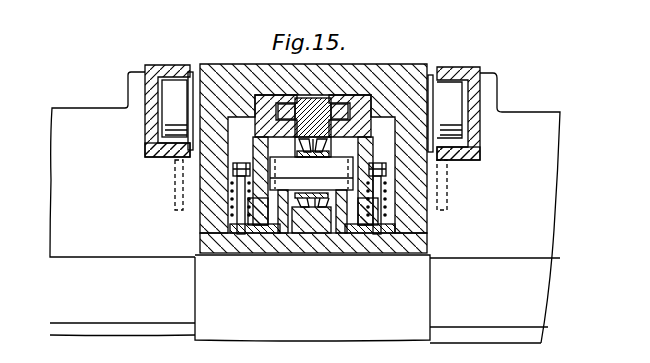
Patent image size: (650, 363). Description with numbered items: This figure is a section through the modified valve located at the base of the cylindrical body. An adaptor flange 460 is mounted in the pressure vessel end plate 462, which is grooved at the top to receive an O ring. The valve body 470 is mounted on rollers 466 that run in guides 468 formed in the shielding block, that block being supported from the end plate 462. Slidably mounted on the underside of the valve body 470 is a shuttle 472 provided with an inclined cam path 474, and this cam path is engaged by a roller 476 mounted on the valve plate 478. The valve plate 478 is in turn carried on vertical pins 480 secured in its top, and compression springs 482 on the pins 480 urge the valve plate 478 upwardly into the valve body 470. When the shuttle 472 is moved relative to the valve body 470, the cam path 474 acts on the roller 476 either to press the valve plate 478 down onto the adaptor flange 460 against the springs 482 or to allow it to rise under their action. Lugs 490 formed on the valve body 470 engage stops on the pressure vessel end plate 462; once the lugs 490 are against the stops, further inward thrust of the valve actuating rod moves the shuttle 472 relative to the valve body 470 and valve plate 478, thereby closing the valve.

The adaptor flange 460 is at (432, 292).
The pressure vessel end plate 462 is at (528, 297).
The rollers 466 is at (173, 93).
The guides 468 is at (150, 153).
The valve body 470 is at (222, 72).
The shuttle 472 is at (325, 97).
The inclined cam path 474 is at (380, 117).
The roller 476 is at (325, 235).
The valve plate 478 is at (256, 248).
The vertical pins 480 is at (243, 212).
The compression springs 482 is at (243, 199).
The lugs 490 is at (190, 177).